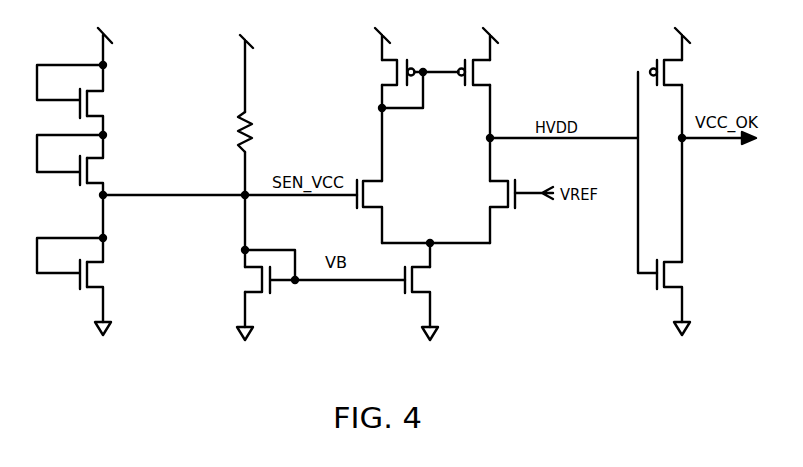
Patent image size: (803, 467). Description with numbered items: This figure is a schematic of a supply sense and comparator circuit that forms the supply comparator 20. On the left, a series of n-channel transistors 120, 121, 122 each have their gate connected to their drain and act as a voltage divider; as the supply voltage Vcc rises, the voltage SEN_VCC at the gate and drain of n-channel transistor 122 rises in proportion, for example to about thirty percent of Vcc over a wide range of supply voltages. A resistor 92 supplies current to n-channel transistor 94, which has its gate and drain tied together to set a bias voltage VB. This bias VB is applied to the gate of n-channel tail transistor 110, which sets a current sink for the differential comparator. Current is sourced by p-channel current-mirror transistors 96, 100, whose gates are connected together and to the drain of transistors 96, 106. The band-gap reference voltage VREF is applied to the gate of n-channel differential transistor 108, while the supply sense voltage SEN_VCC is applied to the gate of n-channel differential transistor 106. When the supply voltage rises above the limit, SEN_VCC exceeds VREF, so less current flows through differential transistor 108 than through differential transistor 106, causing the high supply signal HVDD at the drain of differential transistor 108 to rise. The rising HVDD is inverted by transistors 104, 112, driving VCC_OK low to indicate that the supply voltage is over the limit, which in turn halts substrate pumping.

The supply comparator 20 is at (260, 387).
The resistor 92 is at (260, 133).
The n-channel transistor 94 is at (253, 277).
The p-channel current-mirror transistor 96 is at (390, 74).
The p-channel current-mirror transistor 100 is at (483, 73).
The transistor 104 is at (673, 70).
The n-channel differential transistor 106 is at (368, 192).
The n-channel differential transistor 108 is at (497, 188).
The n-channel tail transistor 110 is at (425, 281).
The transistor 112 is at (672, 273).
The n-channel transistor 120 is at (100, 101).
The n-channel transistor 121 is at (100, 168).
The n-channel transistor 122 is at (100, 279).